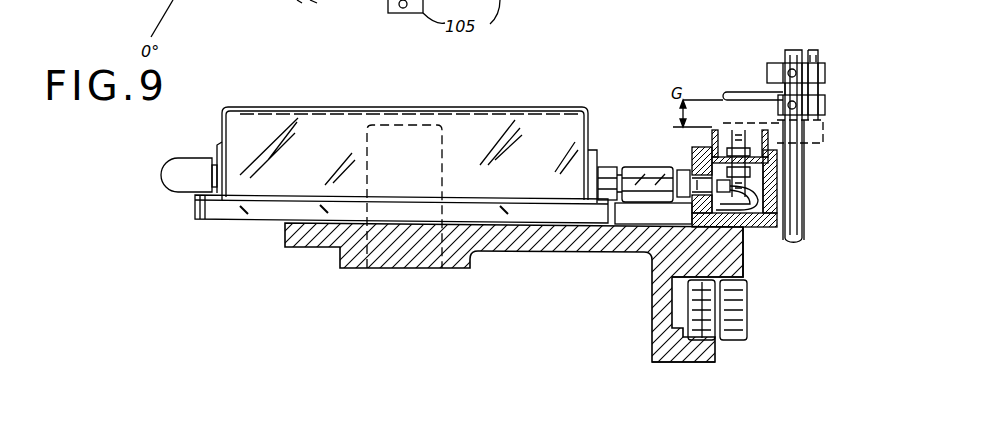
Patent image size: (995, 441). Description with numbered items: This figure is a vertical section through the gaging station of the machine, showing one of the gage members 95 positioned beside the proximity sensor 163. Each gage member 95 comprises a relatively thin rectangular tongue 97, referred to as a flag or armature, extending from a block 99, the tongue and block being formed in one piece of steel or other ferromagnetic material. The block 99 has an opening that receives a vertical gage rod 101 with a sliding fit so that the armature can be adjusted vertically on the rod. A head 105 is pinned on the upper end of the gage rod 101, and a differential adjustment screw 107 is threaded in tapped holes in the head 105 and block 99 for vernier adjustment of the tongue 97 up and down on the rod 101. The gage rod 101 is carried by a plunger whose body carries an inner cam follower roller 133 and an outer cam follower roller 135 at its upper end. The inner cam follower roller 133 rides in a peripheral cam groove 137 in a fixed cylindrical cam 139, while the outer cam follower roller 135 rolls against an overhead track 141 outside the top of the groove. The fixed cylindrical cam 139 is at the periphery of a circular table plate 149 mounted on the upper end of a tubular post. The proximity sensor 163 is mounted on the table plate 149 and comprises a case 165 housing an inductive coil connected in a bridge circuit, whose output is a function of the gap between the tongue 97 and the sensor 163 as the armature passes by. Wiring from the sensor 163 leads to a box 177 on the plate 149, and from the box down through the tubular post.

The box 177 is at (300, 107).
The proximity sensor 163 is at (688, 162).
The case 165 is at (770, 180).
The table plate 149 is at (527, 252).
The overhead track 141 is at (732, 275).
The fixed cylindrical cam 139 is at (657, 365).
The cam groove 137 is at (677, 308).
The outer cam follower roller 135 is at (737, 342).
The inner cam follower roller 133 is at (702, 340).
The tongue 97 is at (725, 94).
The gage member 95 is at (793, 50).
The gage rod 101 is at (802, 212).
The differential adjustment screw 107 is at (812, 50).
The head 105 is at (825, 69).
The block 99 is at (825, 107).